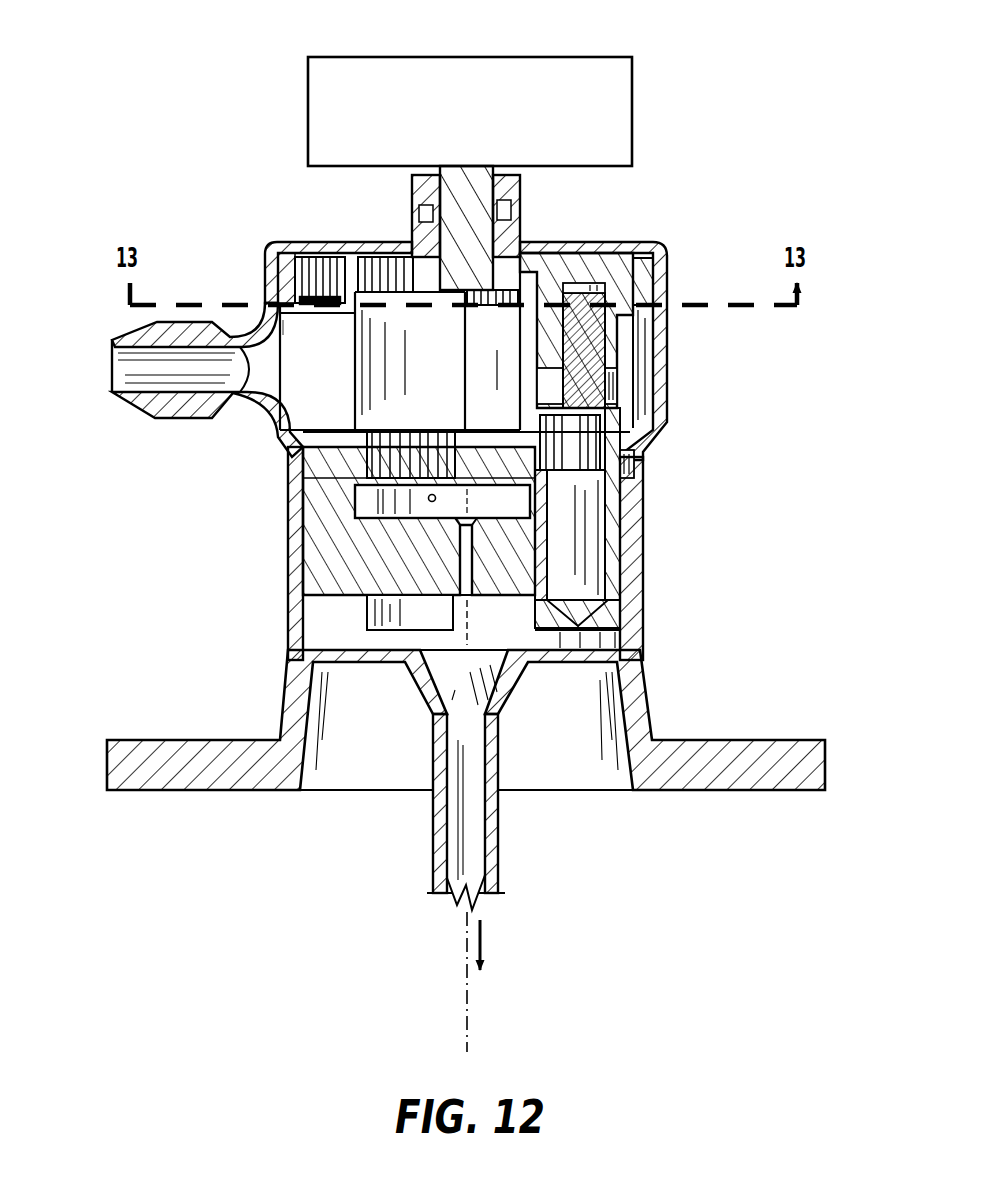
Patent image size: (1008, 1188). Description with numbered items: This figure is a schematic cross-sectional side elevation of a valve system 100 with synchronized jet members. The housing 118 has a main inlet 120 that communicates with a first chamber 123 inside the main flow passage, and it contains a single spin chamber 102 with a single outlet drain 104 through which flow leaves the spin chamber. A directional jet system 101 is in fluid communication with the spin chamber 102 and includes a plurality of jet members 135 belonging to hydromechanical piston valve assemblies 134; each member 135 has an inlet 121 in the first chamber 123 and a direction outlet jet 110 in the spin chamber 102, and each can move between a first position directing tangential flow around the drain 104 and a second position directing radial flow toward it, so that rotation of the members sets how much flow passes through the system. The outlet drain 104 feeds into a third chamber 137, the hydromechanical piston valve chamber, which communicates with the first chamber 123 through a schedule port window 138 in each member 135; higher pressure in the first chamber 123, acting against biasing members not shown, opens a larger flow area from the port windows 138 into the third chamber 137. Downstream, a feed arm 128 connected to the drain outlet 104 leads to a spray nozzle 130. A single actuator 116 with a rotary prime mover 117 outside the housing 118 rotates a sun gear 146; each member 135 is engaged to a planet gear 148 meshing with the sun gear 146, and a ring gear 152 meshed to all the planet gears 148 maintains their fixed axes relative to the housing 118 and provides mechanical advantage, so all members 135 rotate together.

The valve system 100 is at (815, 689).
The directional jet system 101 is at (752, 404).
The spin chamber 102 is at (643, 527).
The outlet drain 104 is at (467, 580).
The direction outlet jet 110 is at (560, 507).
The actuator 116 is at (710, 70).
The rotary prime mover 117 is at (570, 72).
The housing 118 is at (292, 537).
The main inlet 120 is at (123, 362).
The inlet 121 is at (420, 460).
The first chamber 123 is at (315, 397).
The feed arm 128 is at (498, 866).
The spray nozzle 130 is at (527, 993).
The hydromechanical piston valve assembly 134 is at (640, 415).
The jet member 135 is at (620, 632).
The third chamber 137 is at (465, 632).
The schedule port window 138 is at (618, 570).
The sun gear 146 is at (466, 270).
The planet gear 148 is at (352, 268).
The ring gear 152 is at (280, 287).